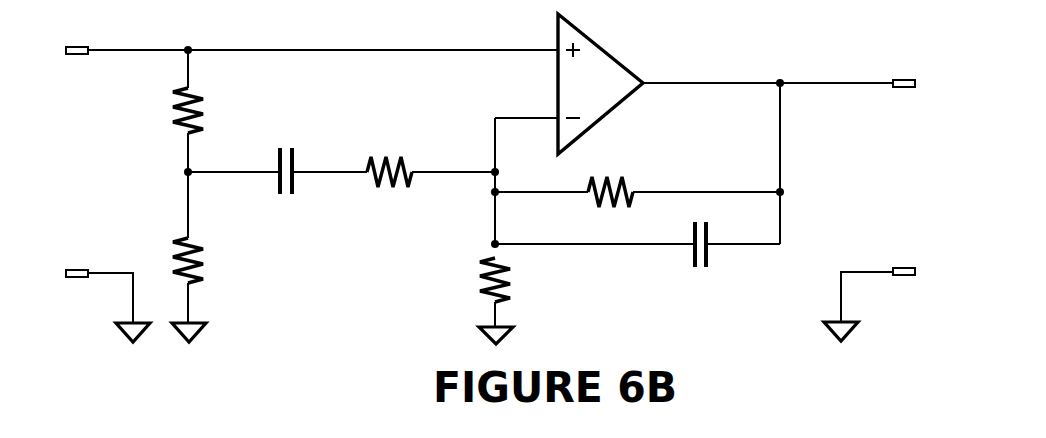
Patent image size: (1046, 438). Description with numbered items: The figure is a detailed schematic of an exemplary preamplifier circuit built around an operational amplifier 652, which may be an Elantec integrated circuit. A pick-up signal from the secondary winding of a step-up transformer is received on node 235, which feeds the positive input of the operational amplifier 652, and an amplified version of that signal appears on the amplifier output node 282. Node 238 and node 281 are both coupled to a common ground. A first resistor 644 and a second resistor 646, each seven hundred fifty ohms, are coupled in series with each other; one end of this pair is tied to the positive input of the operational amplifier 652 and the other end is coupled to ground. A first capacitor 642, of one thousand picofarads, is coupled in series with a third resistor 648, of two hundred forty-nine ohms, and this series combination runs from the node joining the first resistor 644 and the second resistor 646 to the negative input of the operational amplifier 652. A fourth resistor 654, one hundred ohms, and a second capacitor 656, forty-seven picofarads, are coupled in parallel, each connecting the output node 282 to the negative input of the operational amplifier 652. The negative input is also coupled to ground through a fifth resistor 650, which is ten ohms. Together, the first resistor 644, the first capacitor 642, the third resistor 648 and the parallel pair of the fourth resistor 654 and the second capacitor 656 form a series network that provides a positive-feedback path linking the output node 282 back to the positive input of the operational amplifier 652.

The node 235 is at (75, 47).
The node 238 is at (74, 267).
The node 281 is at (903, 265).
The amplifier output node 282 is at (903, 75).
The capacitor C19 642 is at (298, 122).
The resistor R7 644 is at (172, 128).
The resistor R13 646 is at (212, 273).
The resistor R14 648 is at (412, 185).
The resistor R6 650 is at (478, 292).
The operational amplifier 652 is at (617, 58).
The resistor R2 654 is at (602, 210).
The capacitor C4 656 is at (698, 270).